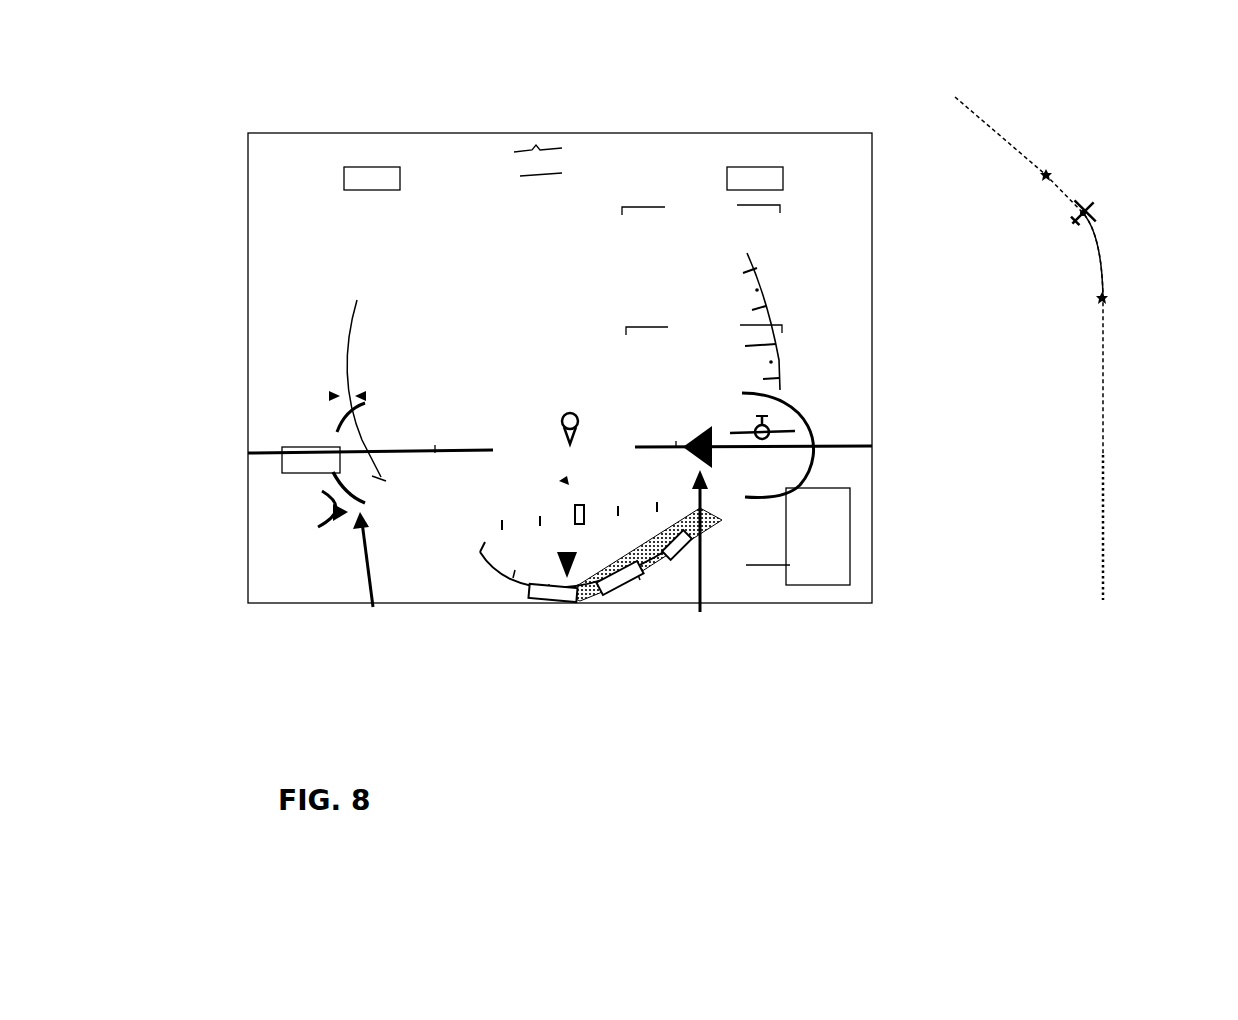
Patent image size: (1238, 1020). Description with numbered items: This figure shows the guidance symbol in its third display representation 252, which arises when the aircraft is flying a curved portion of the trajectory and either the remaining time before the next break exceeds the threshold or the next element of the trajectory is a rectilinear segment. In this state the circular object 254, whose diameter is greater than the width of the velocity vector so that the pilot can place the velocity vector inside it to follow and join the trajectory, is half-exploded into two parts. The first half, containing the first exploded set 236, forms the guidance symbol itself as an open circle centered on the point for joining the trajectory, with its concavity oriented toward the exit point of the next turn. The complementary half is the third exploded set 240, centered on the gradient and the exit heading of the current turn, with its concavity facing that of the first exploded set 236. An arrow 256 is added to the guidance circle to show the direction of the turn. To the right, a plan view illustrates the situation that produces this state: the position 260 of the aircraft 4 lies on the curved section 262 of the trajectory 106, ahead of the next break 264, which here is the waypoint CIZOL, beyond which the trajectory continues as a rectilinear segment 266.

The third display representation 252 is at (316, 109).
The third exploded set 240 is at (337, 425).
The circular object 254 is at (740, 393).
The first exploded set 236 is at (820, 438).
The arrow 256 is at (699, 570).
The rectilinear segment 266 is at (993, 131).
The next break 264 is at (1040, 176).
The aircraft 4 is at (1091, 215).
The position 260 is at (1086, 227).
The curved section 262 is at (1104, 273).
The trajectory 106 is at (1105, 455).